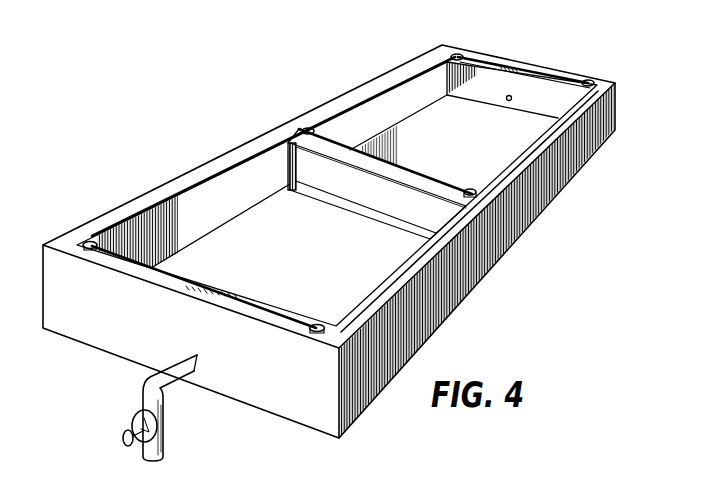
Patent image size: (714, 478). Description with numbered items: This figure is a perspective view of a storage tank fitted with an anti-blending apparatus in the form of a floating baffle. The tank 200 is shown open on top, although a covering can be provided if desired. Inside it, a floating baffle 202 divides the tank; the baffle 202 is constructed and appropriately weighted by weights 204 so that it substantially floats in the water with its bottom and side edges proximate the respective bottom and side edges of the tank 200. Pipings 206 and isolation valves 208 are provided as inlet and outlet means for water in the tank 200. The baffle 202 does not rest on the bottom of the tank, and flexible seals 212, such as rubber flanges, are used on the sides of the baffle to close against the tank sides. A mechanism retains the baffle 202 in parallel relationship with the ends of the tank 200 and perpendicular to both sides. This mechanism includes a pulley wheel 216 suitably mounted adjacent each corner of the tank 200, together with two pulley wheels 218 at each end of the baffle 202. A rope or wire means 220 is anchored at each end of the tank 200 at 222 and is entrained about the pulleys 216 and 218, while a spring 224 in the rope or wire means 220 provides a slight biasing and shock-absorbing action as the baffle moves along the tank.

The tank 200 is at (550, 237).
The floating baffle 202 is at (432, 166).
The weights 204 is at (301, 224).
The pipings 206 is at (143, 388).
The isolation valves 208 is at (122, 440).
The seals 212 is at (287, 140).
The pulley wheel 216 is at (88, 240).
The pulley wheels 218 is at (307, 127).
The rope or wire means 220 is at (391, 82).
The anchor 222 is at (187, 288).
The spring 224 is at (514, 67).